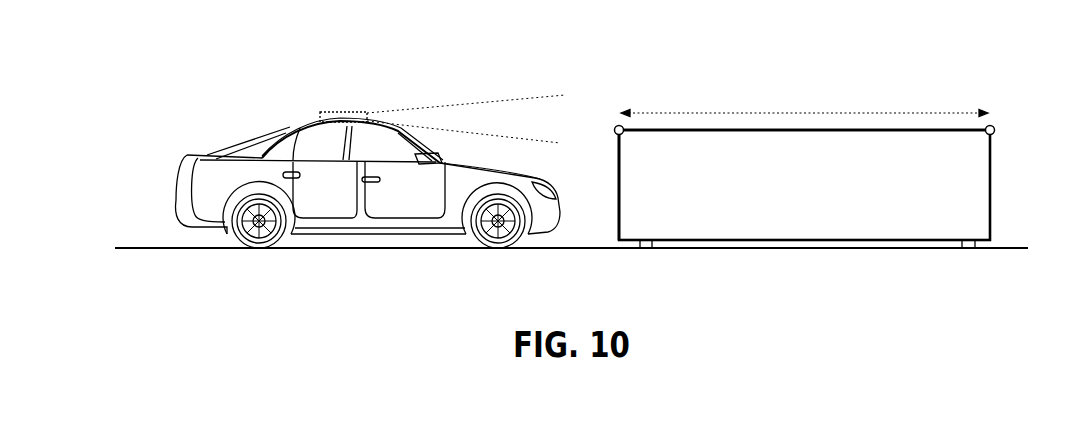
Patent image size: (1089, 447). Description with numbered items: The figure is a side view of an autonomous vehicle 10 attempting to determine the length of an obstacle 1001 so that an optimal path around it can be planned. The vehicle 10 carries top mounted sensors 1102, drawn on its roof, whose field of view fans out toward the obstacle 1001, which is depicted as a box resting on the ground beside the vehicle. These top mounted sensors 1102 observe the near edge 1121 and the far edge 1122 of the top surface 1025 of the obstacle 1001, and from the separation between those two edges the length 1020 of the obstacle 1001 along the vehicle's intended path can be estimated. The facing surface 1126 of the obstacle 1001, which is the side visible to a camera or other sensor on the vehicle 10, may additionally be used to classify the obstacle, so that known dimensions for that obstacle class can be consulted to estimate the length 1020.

The autonomous vehicle 10 is at (341, 201).
The top mounted sensors 1102 is at (340, 112).
The obstacle 1001 is at (831, 196).
The length 1020 is at (820, 112).
The top surface 1025 is at (936, 128).
The near edge 1121 is at (619, 126).
The far edge 1122 is at (990, 126).
The facing surface 1126 is at (618, 190).